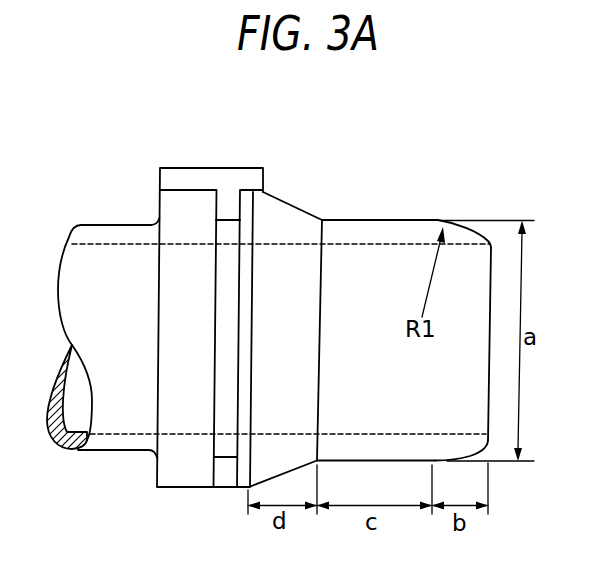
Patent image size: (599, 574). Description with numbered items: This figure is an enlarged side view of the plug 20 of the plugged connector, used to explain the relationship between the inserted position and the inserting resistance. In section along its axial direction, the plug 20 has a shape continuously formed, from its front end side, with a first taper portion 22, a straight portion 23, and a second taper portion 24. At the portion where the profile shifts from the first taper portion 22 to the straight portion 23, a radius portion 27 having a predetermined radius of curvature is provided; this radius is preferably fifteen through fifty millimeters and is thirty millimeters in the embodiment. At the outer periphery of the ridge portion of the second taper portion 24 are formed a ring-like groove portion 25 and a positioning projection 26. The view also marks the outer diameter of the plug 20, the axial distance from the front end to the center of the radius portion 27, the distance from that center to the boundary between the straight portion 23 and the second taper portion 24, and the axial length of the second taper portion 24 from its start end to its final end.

The plug 20 is at (102, 184).
The first taper portion 22 is at (470, 232).
The straight portion 23 is at (360, 218).
The second taper portion 24 is at (285, 200).
The ring-like groove portion 25 is at (225, 220).
The positioning projection 26 is at (183, 168).
The radius portion 27 is at (437, 220).